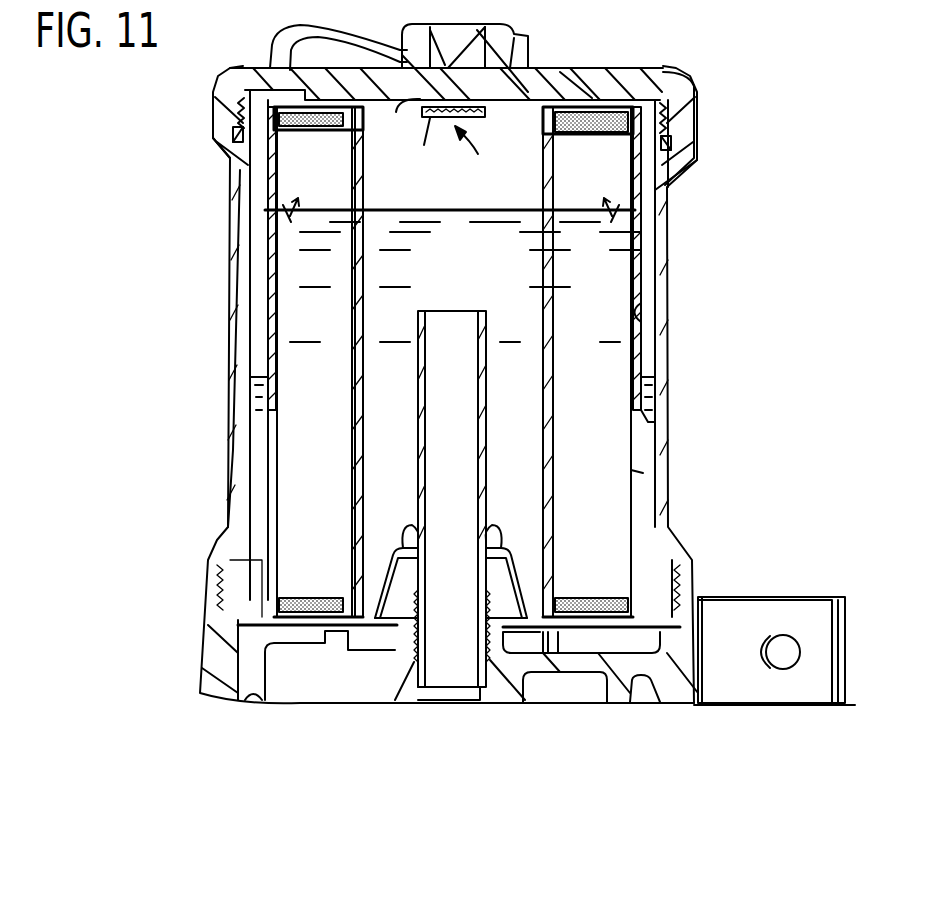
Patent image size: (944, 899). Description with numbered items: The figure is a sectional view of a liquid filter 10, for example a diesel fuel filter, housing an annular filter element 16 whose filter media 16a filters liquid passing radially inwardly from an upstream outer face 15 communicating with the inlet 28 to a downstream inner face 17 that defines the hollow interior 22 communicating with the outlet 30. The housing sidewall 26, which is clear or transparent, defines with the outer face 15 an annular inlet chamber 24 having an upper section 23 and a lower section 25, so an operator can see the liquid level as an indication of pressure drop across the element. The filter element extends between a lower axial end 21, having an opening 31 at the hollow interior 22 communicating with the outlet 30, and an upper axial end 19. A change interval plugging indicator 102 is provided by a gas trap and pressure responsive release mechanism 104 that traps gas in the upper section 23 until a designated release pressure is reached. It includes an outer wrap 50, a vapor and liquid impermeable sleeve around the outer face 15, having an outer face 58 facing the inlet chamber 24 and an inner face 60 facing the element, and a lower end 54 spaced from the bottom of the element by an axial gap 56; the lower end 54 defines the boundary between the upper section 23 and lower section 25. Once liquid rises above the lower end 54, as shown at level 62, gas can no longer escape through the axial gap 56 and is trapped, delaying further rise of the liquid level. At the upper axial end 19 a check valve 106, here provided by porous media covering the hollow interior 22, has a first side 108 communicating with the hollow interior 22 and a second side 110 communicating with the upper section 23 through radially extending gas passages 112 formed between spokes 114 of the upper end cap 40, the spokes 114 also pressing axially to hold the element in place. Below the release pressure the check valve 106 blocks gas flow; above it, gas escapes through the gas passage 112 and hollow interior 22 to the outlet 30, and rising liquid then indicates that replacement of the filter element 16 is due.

The liquid filter 10 is at (176, 132).
The upper end cap 40 is at (250, 72).
The spokes 114 is at (298, 46).
The change interval plugging indicator 102 is at (490, 108).
The radially extending gas passage 112 is at (575, 98).
The upper axial end 19 is at (638, 100).
The check valve 106 is at (468, 118).
The second side 110 is at (396, 112).
The first side 108 is at (426, 147).
The gas trap and pressure responsive release mechanism 104 is at (474, 159).
The hollow interior 22 is at (404, 194).
The outer wrap 50 is at (262, 287).
The upper section 23 is at (248, 348).
The lower section 25 is at (250, 456).
The filter element 16 is at (300, 510).
The filter media 16a is at (612, 545).
The inner face 17 is at (543, 435).
The outer face 15 is at (628, 517).
The axial gap 56 is at (643, 473).
The inlet chamber 24 is at (650, 242).
The outer face of sleeve 58 is at (648, 283).
The inner face of sleeve 60 is at (645, 318).
The sidewall 26 is at (656, 348).
The liquid level 62 is at (655, 366).
The lower end 54 is at (645, 420).
The outlet 30 is at (450, 672).
The opening 31 is at (425, 530).
The lower axial end 21 is at (262, 610).
The inlet 28 is at (665, 595).